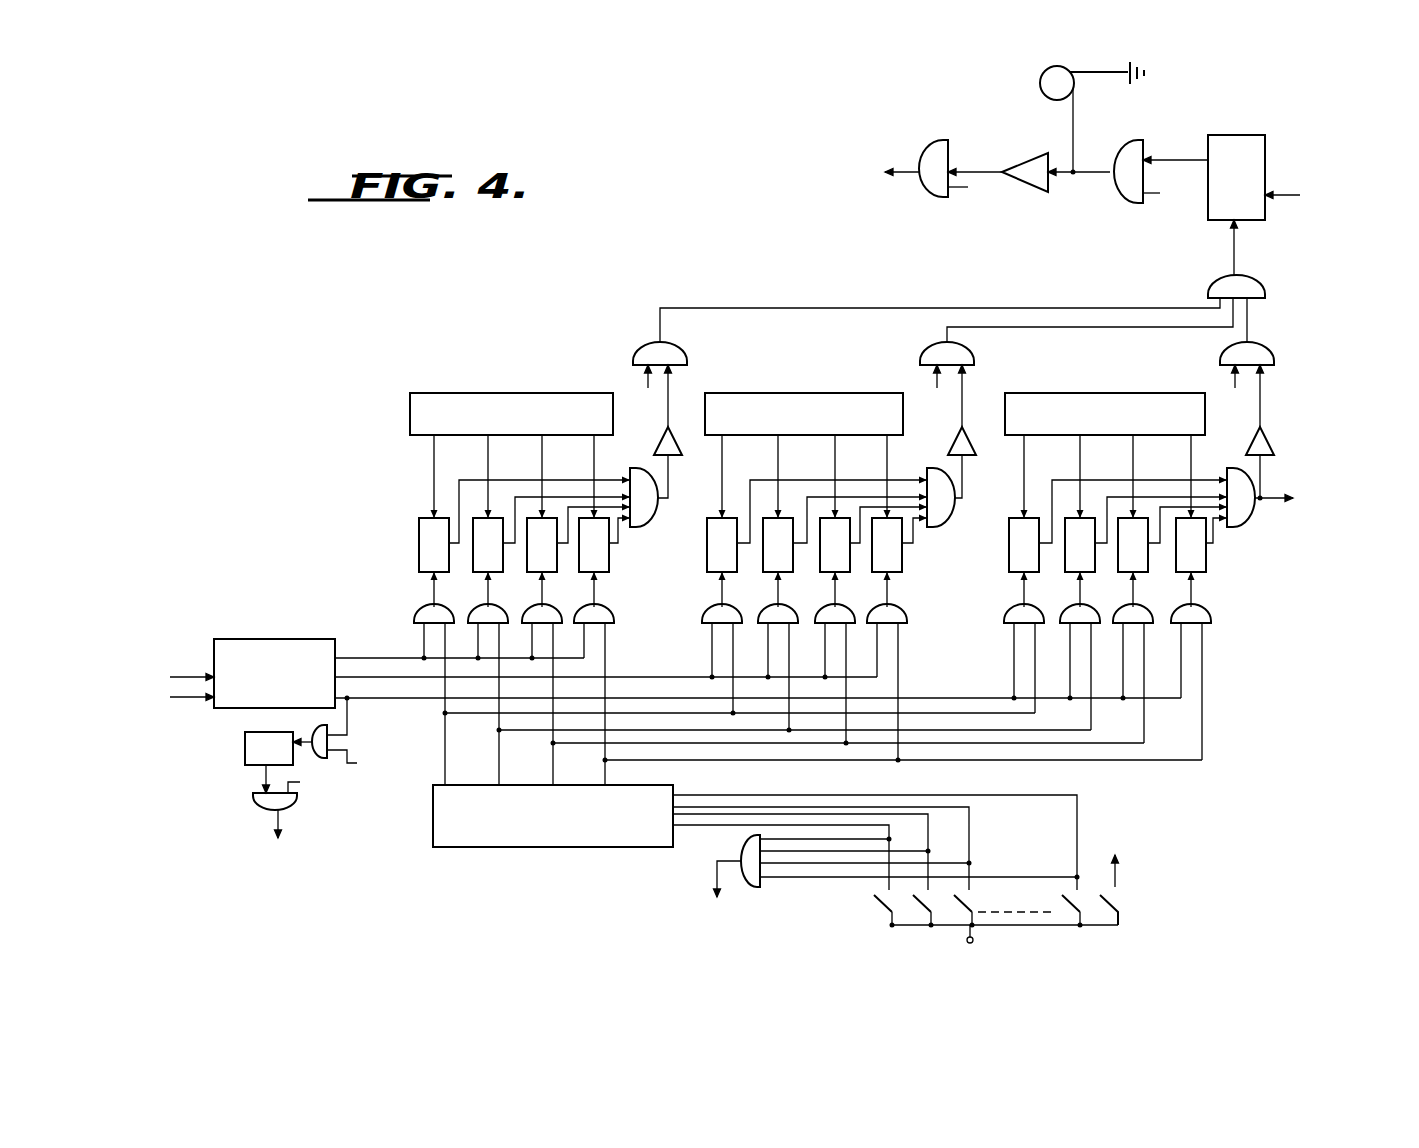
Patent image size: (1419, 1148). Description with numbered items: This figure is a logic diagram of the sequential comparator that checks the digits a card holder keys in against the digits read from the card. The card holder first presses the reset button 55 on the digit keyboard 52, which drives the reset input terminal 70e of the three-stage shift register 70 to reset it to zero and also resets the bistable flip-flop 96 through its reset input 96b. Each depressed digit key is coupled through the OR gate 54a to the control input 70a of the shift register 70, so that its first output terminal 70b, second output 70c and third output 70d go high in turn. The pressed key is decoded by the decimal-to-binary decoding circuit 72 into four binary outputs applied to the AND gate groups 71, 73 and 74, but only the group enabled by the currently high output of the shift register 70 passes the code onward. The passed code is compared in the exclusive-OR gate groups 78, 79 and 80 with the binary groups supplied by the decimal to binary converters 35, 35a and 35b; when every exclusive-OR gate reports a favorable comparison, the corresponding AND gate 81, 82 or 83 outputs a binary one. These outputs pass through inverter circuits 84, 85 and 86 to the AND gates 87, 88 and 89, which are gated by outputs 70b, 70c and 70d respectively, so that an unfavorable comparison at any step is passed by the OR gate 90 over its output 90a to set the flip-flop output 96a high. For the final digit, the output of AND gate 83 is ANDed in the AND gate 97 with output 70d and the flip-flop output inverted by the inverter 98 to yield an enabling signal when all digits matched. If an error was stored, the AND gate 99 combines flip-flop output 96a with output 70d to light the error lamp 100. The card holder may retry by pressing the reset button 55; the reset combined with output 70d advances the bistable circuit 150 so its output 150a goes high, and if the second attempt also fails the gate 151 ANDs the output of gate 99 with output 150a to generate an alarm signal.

The decimal to binary converter 35 is at (515, 393).
The decimal to binary converter 35a is at (808, 378).
The decimal to binary converter 35b is at (1122, 380).
The digit keyboard 52 is at (872, 915).
The OR gate 54a is at (745, 848).
The reset button 55 is at (1118, 894).
The three-stage shift register 70 is at (290, 639).
The control input 70a is at (200, 672).
The first output terminal 70b is at (356, 658).
The second output 70c is at (388, 677).
The third output 70d is at (370, 700).
The reset input terminal 70e is at (198, 700).
The AND gate group 71 is at (414, 612).
The decimal-to-binary decoding circuit 72 is at (433, 815).
The AND gate group 73 is at (702, 620).
The AND gate group 74 is at (1004, 622).
The exclusive-OR gate group 78 is at (416, 550).
The exclusive-OR gate group 79 is at (707, 551).
The exclusive-OR gate group 80 is at (1005, 551).
The AND gate 81 is at (656, 522).
The AND gate 82 is at (953, 522).
The AND gate 83 is at (1253, 522).
The inverter circuit 84 is at (654, 442).
The inverter circuit 85 is at (948, 445).
The inverter circuit 86 is at (1275, 448).
The AND gate 87 is at (650, 343).
The AND gate 88 is at (920, 352).
The AND gate 89 is at (1277, 358).
The OR gate 90 is at (1208, 295).
The OR gate output 90a is at (1232, 262).
The bistable flip-flop 96 is at (1240, 135).
The flip-flop output 96a is at (1175, 160).
The reset input 96b is at (1325, 206).
The AND gate 97 is at (936, 140).
The inverter 98 is at (1032, 153).
The AND gate 99 is at (1120, 140).
The error lamp 100 is at (1040, 83).
The bistable circuit 150 is at (245, 755).
The bistable circuit output 150a is at (262, 775).
The gate 151 is at (258, 808).